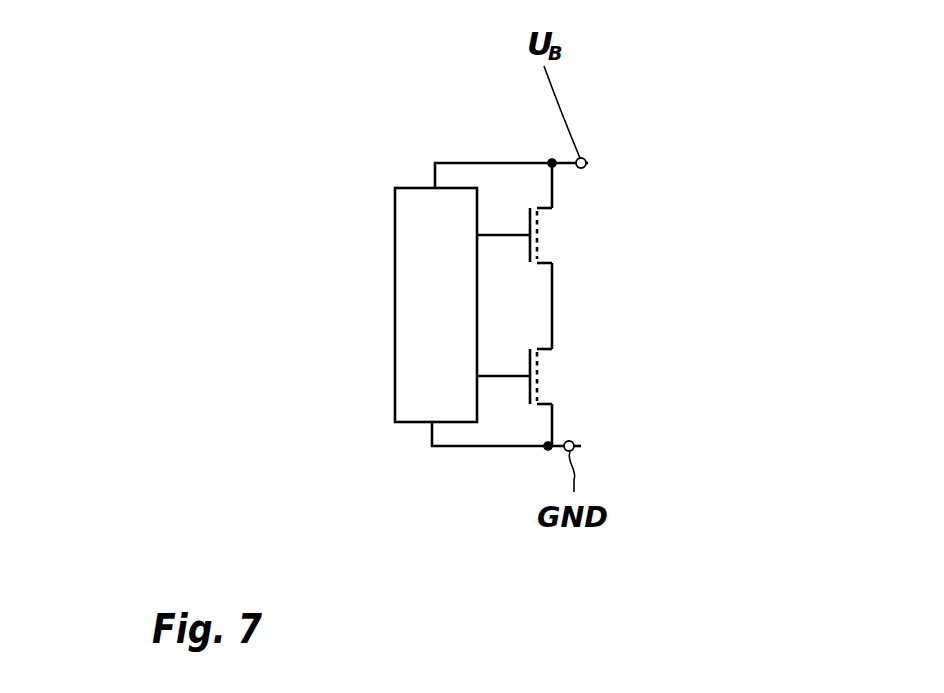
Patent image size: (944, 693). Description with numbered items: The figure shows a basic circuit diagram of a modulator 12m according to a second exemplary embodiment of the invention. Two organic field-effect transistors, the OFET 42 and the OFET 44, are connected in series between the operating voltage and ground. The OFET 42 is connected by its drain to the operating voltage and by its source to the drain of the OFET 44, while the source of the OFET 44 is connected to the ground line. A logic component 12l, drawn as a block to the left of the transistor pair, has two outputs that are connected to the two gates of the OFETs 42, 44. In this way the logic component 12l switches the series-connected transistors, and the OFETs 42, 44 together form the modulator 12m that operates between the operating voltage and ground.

The logic component 12l is at (413, 252).
The modulator 12m is at (657, 304).
The OFET 42 is at (545, 236).
The OFET 44 is at (547, 380).